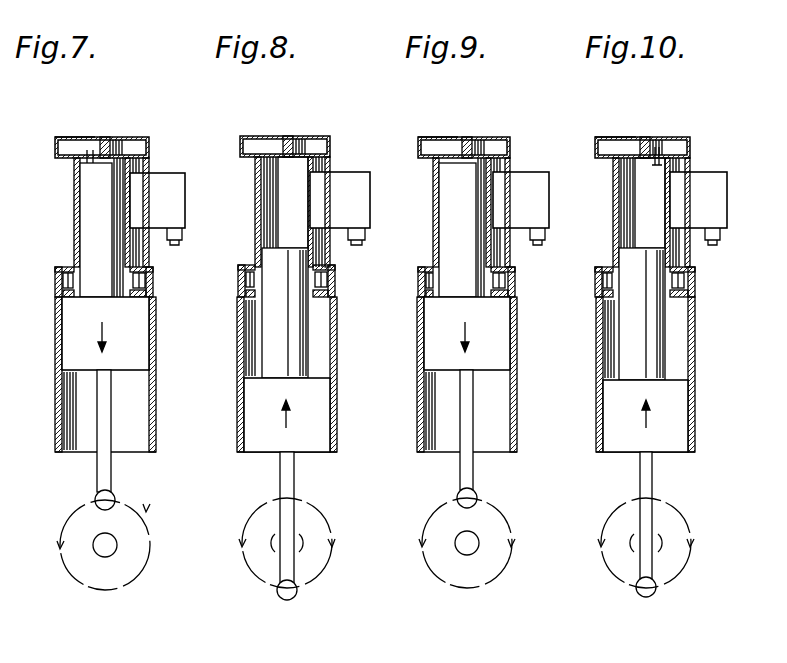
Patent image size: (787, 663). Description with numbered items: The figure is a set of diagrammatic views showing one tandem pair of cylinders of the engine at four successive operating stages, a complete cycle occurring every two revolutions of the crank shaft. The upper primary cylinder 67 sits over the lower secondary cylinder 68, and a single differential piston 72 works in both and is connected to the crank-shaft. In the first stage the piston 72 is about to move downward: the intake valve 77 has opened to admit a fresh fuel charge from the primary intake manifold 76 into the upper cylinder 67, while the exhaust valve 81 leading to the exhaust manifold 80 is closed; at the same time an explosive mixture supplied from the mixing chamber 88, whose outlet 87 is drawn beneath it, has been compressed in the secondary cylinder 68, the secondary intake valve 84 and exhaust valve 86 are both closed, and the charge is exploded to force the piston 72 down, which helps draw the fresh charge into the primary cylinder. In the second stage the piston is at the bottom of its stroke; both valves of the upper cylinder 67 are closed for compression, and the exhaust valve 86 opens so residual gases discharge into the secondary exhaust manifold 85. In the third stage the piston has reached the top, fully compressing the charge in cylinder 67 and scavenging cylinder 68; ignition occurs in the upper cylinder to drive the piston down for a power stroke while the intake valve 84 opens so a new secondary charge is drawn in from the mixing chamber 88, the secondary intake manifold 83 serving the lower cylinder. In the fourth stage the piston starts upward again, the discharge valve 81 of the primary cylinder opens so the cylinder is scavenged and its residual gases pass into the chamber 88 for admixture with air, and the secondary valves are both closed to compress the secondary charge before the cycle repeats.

In FIG. 7, the upper primary cylinder 67 is at (104, 137).
In FIG. 8, the upper primary cylinder 67 is at (286, 136).
In FIG. 9, the upper primary cylinder 67 is at (467, 137).
In FIG. 10, the upper primary cylinder 67 is at (646, 137).
In FIG. 7, the lower secondary cylinder 68 is at (62, 300).
In FIG. 8, the lower secondary cylinder 68 is at (244, 303).
In FIG. 9, the lower secondary cylinder 68 is at (424, 302).
In FIG. 10, the lower secondary cylinder 68 is at (603, 330).
In FIG. 7, the differential piston 72 is at (101, 227).
In FIG. 8, the differential piston 72 is at (285, 267).
In FIG. 9, the differential piston 72 is at (461, 227).
In FIG. 10, the differential piston 72 is at (642, 269).
In FIG. 7, the intake manifold 76 is at (63, 137).
In FIG. 9, the intake manifold 76 is at (436, 137).
In FIG. 10, the intake manifold 76 is at (612, 137).
In FIG. 7, the intake valve 77 is at (74, 176).
In FIG. 8, the intake valve 77 is at (260, 170).
In FIG. 9, the intake valve 77 is at (466, 212).
In FIG. 10, the intake valve 77 is at (646, 212).
In FIG. 7, the exhaust manifold 80 is at (135, 141).
In FIG. 9, the exhaust manifold 80 is at (505, 148).
In FIG. 10, the exhaust manifold 80 is at (688, 148).
In FIG. 7, the exhaust valve 81 is at (122, 140).
In FIG. 8, the exhaust valve 81 is at (305, 150).
In FIG. 9, the exhaust valve 81 is at (486, 145).
In FIG. 10, the exhaust valve 81 is at (665, 145).
In FIG. 7, the intake manifold 83 is at (145, 281).
In FIG. 7, the intake valve 84 is at (147, 295).
In FIG. 9, the intake valve 84 is at (518, 292).
In FIG. 7, the exhaust manifold 85 is at (55, 276).
In FIG. 8, the exhaust manifold 85 is at (240, 277).
In FIG. 9, the exhaust manifold 85 is at (418, 277).
In FIG. 10, the exhaust manifold 85 is at (645, 282).
In FIG. 7, the exhaust valve 86 is at (63, 291).
In FIG. 8, the exhaust valve 86 is at (262, 292).
In FIG. 9, the exhaust valve 86 is at (426, 292).
In FIG. 7, the nozzle 87 is at (182, 237).
In FIG. 8, the nozzle 87 is at (365, 240).
In FIG. 10, the nozzle 87 is at (721, 240).
In FIG. 7, the mixing chamber 88 is at (171, 190).
In FIG. 8, the mixing chamber 88 is at (358, 200).
In FIG. 9, the mixing chamber 88 is at (533, 183).
In FIG. 10, the mixing chamber 88 is at (720, 196).